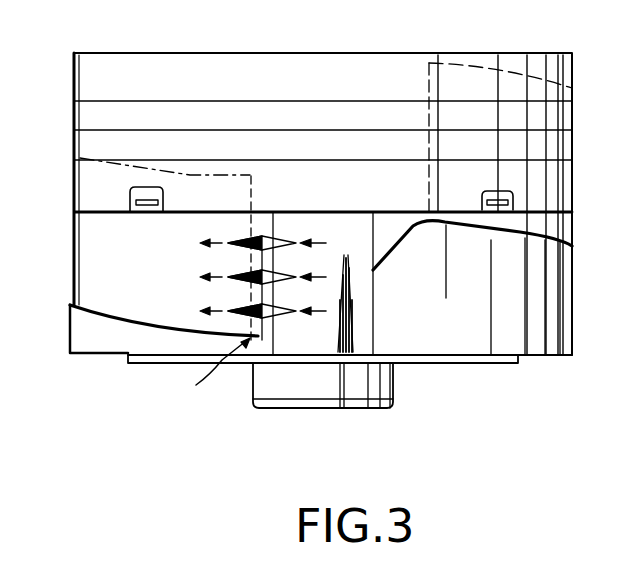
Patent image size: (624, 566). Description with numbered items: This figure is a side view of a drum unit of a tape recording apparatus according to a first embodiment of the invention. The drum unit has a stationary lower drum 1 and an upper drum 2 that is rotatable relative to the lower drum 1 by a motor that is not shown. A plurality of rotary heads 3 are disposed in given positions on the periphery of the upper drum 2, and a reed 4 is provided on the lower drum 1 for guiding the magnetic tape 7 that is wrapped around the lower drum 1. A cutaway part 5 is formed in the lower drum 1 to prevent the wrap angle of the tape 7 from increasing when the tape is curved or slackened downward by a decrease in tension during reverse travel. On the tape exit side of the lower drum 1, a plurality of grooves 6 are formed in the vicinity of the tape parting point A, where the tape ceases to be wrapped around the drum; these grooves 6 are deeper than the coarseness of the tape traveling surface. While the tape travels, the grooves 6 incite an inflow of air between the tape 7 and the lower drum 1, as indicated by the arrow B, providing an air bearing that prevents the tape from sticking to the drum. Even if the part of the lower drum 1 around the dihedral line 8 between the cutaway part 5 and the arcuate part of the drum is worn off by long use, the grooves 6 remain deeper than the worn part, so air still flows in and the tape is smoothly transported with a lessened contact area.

The lower drum 1 is at (107, 252).
The upper drum 2 is at (153, 63).
The rotary heads 3 is at (131, 190).
The reed 4 is at (165, 330).
The cutaway part 5 is at (305, 345).
The grooves 6 is at (266, 238).
The magnetic tape 7 is at (203, 175).
The dihedral line 8 is at (249, 325).
The tape parting point A is at (214, 323).
The arrow indicating inflow of air B is at (330, 236).